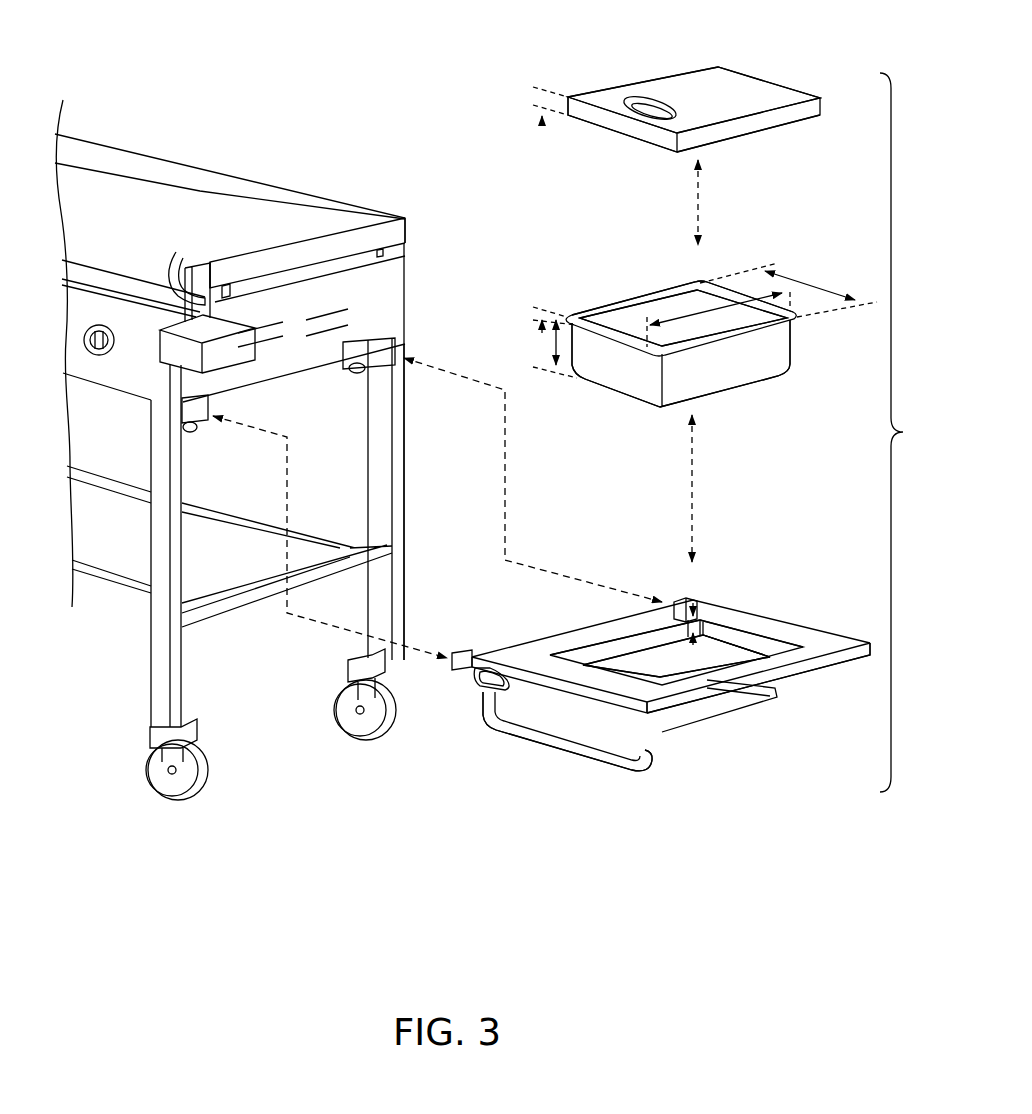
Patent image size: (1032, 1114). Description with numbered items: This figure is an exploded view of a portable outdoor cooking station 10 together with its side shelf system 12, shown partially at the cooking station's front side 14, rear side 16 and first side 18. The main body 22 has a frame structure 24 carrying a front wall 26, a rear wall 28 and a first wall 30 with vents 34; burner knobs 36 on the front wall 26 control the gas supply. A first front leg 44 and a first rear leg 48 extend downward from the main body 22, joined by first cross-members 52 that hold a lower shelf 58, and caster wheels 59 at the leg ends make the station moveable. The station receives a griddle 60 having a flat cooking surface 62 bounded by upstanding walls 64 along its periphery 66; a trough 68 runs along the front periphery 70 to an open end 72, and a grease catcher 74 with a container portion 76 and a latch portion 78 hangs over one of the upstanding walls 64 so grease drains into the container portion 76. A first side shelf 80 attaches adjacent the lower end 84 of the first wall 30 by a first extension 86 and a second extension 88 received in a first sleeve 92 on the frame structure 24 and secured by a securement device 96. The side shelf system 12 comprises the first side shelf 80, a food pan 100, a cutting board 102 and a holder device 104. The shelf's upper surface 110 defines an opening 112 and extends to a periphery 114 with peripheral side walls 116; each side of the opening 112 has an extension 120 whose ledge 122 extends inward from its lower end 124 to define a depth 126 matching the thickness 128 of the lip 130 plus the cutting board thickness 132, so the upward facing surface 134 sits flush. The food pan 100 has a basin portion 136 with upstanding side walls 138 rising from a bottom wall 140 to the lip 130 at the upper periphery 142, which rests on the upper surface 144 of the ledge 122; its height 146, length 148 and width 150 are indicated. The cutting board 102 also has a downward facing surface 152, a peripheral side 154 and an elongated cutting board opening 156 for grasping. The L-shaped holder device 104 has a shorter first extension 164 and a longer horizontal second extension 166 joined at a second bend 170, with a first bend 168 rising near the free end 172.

The portable outdoor cooking station 10 is at (136, 68).
The side shelf system 12 is at (911, 432).
The front side 14 is at (58, 468).
The rear side 16 is at (416, 178).
The first side 18 is at (413, 388).
The main body 22 is at (412, 277).
The frame structure 24 is at (437, 508).
The front wall 26 is at (112, 380).
The rear wall 28 is at (409, 254).
The first wall 30 is at (406, 312).
The vents 34 is at (330, 304).
The burner knobs 36 is at (83, 340).
The first front leg 44 is at (150, 664).
The first rear leg 48 is at (398, 485).
The first cross-members 52 is at (258, 605).
The lower shelf 58 is at (97, 572).
The caster wheels 59 is at (207, 794).
The griddle 60 is at (208, 168).
The flat cooking surface 62 is at (125, 192).
The upstanding walls 64 is at (365, 209).
The periphery 66 is at (263, 203).
The trough 68 is at (129, 282).
The front periphery 70 is at (88, 261).
The open end 72 is at (185, 264).
The grease catcher 74 is at (236, 310).
The container portion 76 is at (228, 352).
The latch portion 78 is at (199, 264).
The first side shelf 80 is at (813, 738).
The lower end 84 is at (222, 388).
The first extension 86 is at (463, 650).
The second extension 88 is at (701, 588).
The first sleeve 92 is at (201, 433).
The securement device 96 is at (358, 374).
The food pan 100 is at (798, 348).
The cutting board 102 is at (792, 154).
The holder device 104 is at (541, 752).
The upper surface 110 is at (836, 646).
The opening 112 is at (776, 626).
The periphery 114 is at (694, 686).
The peripheral side walls 116 is at (745, 686).
The extension 120 is at (736, 626).
The ledge 122 is at (746, 626).
The lower end 124 is at (781, 620).
The depth 126 is at (690, 598).
The thickness 128 is at (542, 306).
The lip 130 is at (598, 300).
The cutting board thickness 132 is at (543, 87).
The upward facing surface 134 is at (728, 78).
The basin portion 136 is at (802, 370).
The upstanding side walls 138 is at (590, 365).
The bottom wall 140 is at (748, 384).
The upper periphery 142 is at (643, 292).
The upper surface 144 is at (618, 645).
The height 146 is at (554, 345).
The length 148 is at (651, 325).
The width 150 is at (812, 284).
The downward facing surface 152 is at (648, 140).
The peripheral side 154 is at (581, 122).
The cutting board opening 156 is at (660, 106).
The first extension 164 is at (483, 696).
The second extension 166 is at (578, 760).
The first bend 168 is at (650, 757).
The second bend 170 is at (508, 721).
The free end 172 is at (656, 756).